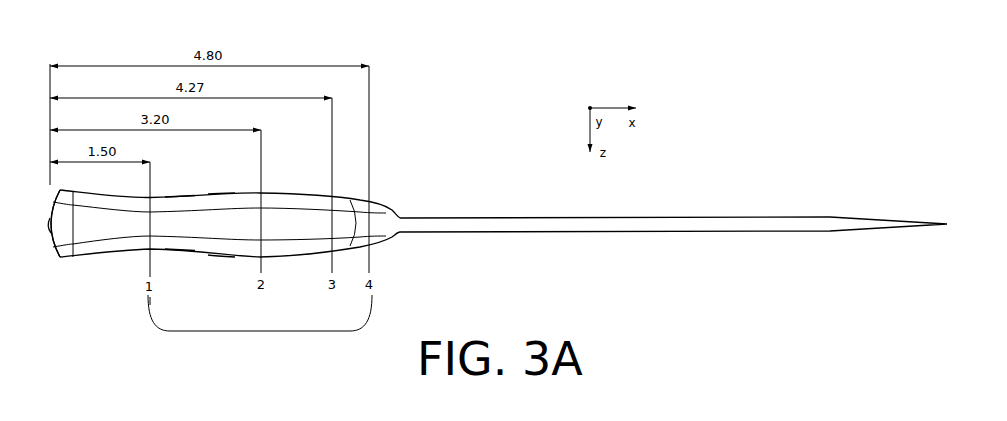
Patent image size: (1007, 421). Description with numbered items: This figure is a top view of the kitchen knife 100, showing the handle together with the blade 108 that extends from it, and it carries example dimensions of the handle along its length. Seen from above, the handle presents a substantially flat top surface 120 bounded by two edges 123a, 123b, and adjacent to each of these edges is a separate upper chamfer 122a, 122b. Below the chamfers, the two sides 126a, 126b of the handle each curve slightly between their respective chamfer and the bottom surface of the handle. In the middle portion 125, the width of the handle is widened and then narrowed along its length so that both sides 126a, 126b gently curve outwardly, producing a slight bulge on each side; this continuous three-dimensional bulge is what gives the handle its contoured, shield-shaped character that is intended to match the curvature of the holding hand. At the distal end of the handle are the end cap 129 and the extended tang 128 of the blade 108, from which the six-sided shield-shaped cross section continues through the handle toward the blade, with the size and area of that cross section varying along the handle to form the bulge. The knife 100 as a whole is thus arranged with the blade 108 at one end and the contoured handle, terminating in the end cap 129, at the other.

The kitchen knife 100 is at (535, 49).
The blade 108 is at (689, 220).
The substantially flat top surface 120 is at (293, 217).
The upper chamfer 122a is at (182, 251).
The upper chamfer 122b is at (181, 197).
The edge of the substantially flat top surface 123a is at (275, 240).
The edge of the substantially flat top surface 123b is at (268, 208).
The middle portion 125 is at (258, 332).
The side 126a is at (223, 257).
The side 126b is at (222, 193).
The extended tang 128 is at (75, 259).
The end cap 129 is at (51, 232).